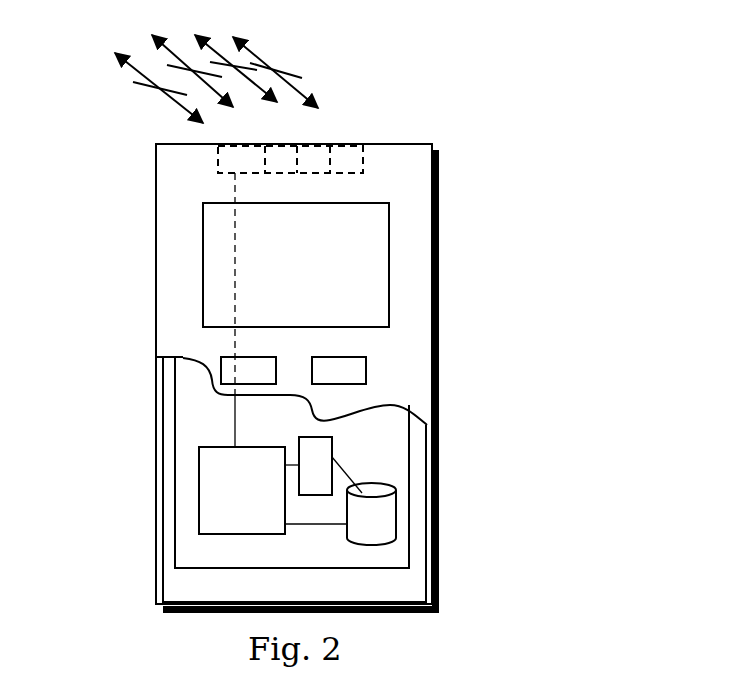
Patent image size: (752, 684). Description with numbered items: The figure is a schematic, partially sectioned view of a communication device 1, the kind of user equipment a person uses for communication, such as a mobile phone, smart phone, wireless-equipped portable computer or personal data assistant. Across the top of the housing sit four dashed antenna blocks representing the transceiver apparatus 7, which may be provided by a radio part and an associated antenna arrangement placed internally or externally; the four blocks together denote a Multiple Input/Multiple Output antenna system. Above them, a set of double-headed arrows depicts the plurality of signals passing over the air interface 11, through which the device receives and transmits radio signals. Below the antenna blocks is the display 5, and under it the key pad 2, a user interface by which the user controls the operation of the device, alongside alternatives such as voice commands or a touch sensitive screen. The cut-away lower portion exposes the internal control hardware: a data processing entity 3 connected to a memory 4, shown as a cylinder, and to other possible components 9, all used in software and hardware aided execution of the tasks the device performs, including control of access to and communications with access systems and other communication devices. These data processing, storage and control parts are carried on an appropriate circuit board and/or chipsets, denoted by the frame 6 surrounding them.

The communication device 1 is at (156, 182).
The key pad 2 is at (227, 373).
The data processing entity 3 is at (206, 476).
The memory 4 is at (367, 527).
The display 5 is at (220, 253).
The circuit board 6 is at (198, 552).
The transceiver apparatus 7 is at (363, 150).
The other components 9 is at (315, 452).
The air interface 11 is at (254, 50).